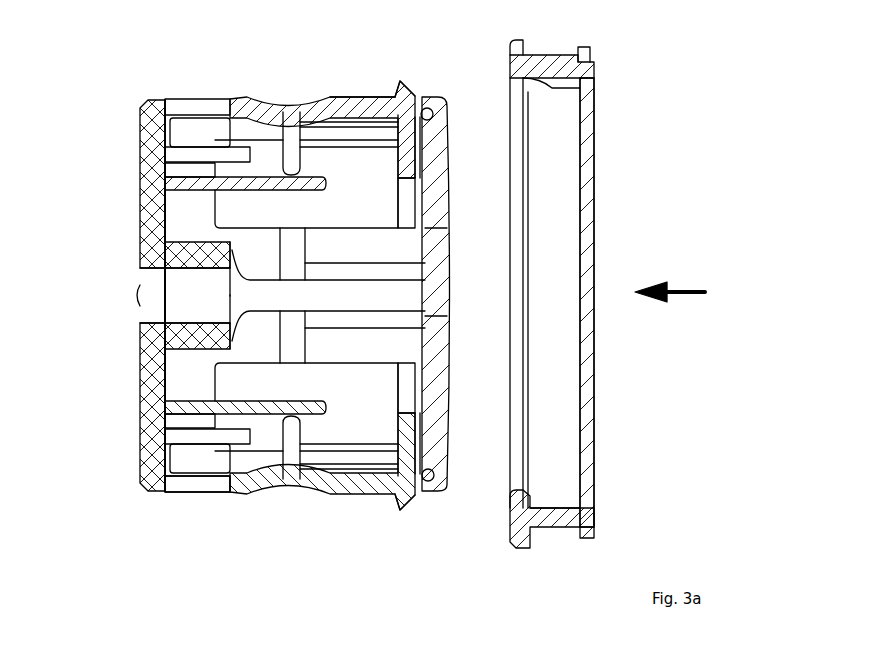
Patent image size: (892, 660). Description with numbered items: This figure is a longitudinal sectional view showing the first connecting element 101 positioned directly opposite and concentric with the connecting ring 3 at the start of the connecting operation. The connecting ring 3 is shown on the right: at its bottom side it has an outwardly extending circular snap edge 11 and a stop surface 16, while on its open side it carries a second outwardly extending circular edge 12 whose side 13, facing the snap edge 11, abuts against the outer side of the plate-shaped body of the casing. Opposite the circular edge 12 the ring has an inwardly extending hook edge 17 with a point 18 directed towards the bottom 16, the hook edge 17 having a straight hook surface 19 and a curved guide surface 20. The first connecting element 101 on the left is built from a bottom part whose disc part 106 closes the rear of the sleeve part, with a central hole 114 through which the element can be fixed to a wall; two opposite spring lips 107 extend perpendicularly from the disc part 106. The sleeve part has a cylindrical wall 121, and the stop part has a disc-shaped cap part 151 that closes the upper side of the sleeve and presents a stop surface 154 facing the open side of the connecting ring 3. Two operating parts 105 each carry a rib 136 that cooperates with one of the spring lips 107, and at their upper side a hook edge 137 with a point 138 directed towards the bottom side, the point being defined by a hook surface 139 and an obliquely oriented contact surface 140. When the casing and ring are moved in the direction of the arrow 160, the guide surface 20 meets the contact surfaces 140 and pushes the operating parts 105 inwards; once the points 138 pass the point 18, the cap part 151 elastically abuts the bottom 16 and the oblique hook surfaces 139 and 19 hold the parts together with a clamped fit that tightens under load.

The first connecting element 101 is at (154, 66).
The operating parts 105 is at (305, 64).
The disc part 106 is at (150, 228).
The spring lips 107 is at (262, 193).
The hole 114 is at (158, 296).
The cylindrical wall 121 is at (192, 488).
The rib 136 is at (298, 155).
The hook edge 137 is at (412, 92).
The points 138 is at (397, 81).
The hook surface 139 is at (393, 94).
The contact surface 140 is at (436, 98).
The cap part 151 is at (445, 230).
The stop surface 154 is at (442, 318).
The connecting ring 3 is at (663, 122).
The snap edge 11 is at (588, 46).
The circular edge 12 is at (509, 46).
The side 13 is at (527, 46).
The stop surface 16 is at (600, 216).
The hook edge 17 is at (512, 96).
The point 18 is at (527, 90).
The hook surface 19 is at (582, 88).
The guide surface 20 is at (508, 100).
The arrow 160 is at (685, 290).